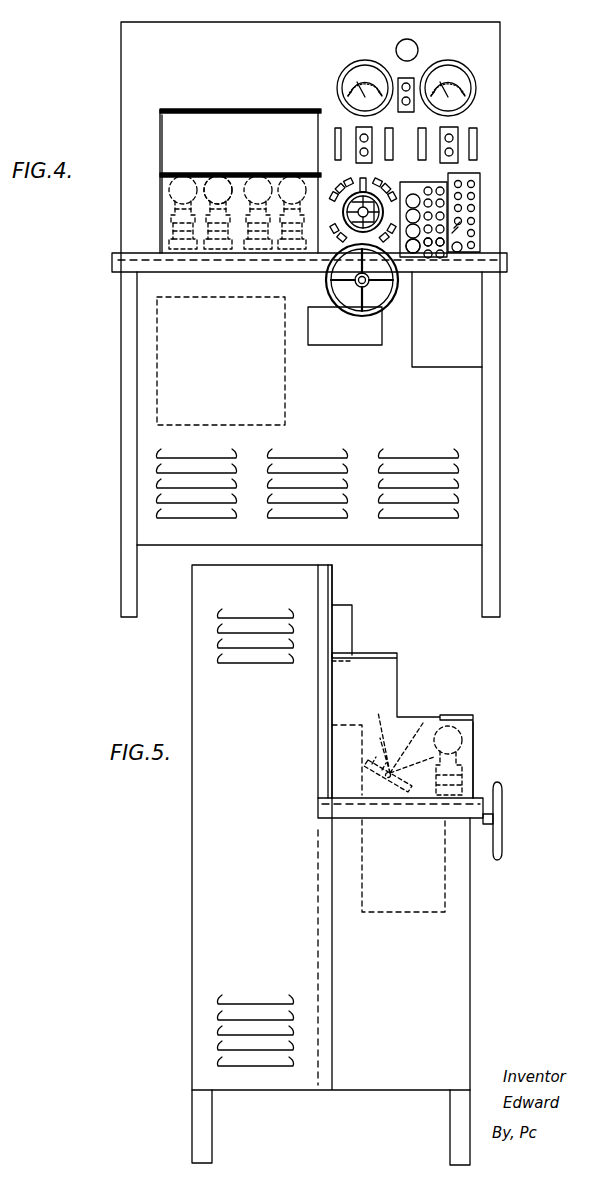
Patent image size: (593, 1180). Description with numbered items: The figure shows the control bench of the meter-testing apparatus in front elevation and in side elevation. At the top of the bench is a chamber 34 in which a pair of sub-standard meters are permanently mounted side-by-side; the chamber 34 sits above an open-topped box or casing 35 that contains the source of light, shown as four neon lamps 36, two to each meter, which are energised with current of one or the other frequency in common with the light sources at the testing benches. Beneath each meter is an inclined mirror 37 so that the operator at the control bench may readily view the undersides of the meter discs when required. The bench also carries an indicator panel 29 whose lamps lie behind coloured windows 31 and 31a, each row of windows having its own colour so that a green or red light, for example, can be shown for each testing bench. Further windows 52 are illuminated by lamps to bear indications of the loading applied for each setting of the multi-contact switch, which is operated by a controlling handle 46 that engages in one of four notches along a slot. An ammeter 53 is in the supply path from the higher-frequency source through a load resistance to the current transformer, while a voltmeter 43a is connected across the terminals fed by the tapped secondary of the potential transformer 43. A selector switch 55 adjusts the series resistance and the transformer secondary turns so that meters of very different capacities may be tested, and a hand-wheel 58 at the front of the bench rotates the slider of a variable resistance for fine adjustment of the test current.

In FIG. 4, the indicator panel 29 is at (424, 190).
In FIG. 4, the windows 31 is at (428, 246).
In FIG. 4, the windows 31a is at (441, 246).
In FIG. 4, the chamber 34 is at (186, 118).
In FIG. 5, the chamber 34 is at (383, 681).
In FIG. 4, the open-topped box or casing 35 is at (163, 185).
In FIG. 5, the open-topped box or casing 35 is at (474, 730).
In FIG. 4, the neon lamps 36 is at (262, 182).
In FIG. 5, the neon lamps 36 is at (462, 752).
In FIG. 4, the inclined mirror 37 is at (165, 228).
In FIG. 5, the inclined mirror 37 is at (365, 770).
In FIG. 4, the potential transformer 43 is at (462, 204).
In FIG. 4, the voltmeter 43a is at (468, 53).
In FIG. 4, the controlling handle 46 is at (462, 247).
In FIG. 4, the windows 52 is at (410, 252).
In FIG. 4, the ammeter 53 is at (350, 72).
In FIG. 4, the selector switch 55 is at (353, 206).
In FIG. 4, the hand-wheel 58 is at (327, 293).
In FIG. 5, the hand-wheel 58 is at (499, 838).